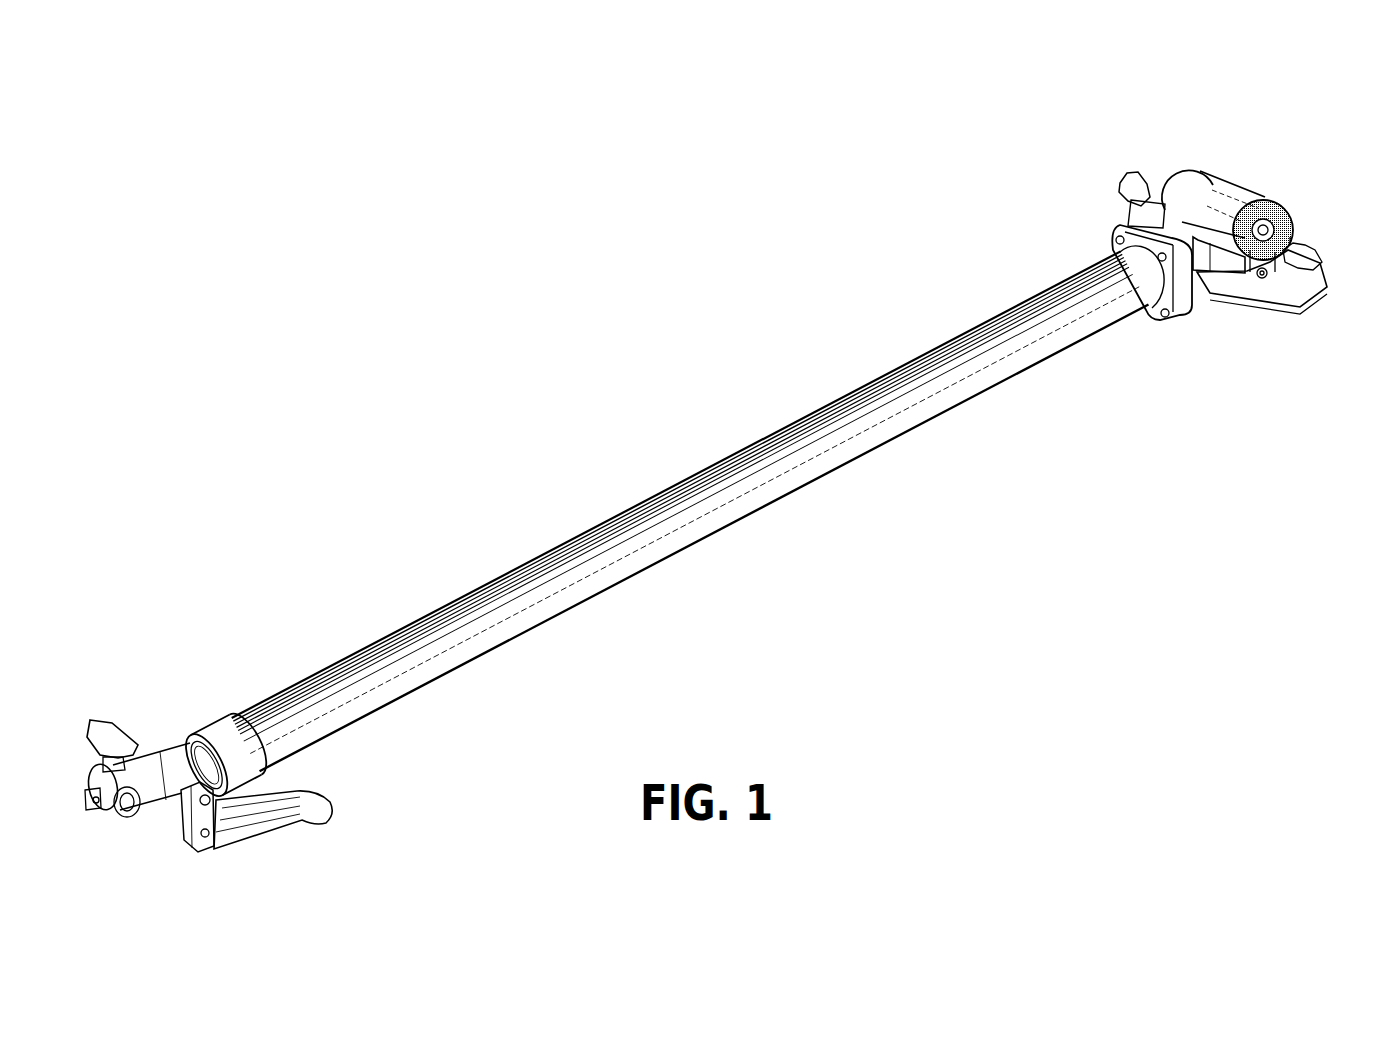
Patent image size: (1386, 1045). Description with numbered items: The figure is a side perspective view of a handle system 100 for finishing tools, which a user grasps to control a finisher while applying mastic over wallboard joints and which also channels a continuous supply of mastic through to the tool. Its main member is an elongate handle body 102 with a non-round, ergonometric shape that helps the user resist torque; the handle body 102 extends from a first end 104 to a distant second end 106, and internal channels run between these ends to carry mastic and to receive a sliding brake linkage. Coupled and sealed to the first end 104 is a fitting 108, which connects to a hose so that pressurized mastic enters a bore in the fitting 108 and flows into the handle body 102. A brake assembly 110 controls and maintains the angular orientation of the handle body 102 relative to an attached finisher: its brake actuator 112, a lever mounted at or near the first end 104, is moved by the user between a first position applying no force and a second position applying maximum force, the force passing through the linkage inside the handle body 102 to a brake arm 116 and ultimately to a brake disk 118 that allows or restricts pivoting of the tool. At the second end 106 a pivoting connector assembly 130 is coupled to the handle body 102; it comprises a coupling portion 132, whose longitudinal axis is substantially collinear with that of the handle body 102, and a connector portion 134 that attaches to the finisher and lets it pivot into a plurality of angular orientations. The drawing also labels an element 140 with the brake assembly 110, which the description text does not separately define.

The handle system 100 is at (515, 322).
The handle body 102 is at (665, 490).
The first end 104 is at (205, 710).
The second end 106 is at (1103, 243).
The fitting 108 is at (130, 810).
The brake assembly 110 is at (799, 548).
The brake actuator 112 is at (307, 823).
The brake arm 116 is at (1243, 278).
The brake disk 118 is at (1268, 196).
The pivoting connector assembly 130 is at (1157, 165).
The coupling portion 132 is at (1232, 195).
The connector portion 134 is at (1190, 185).
The fastener 140 is at (1263, 275).